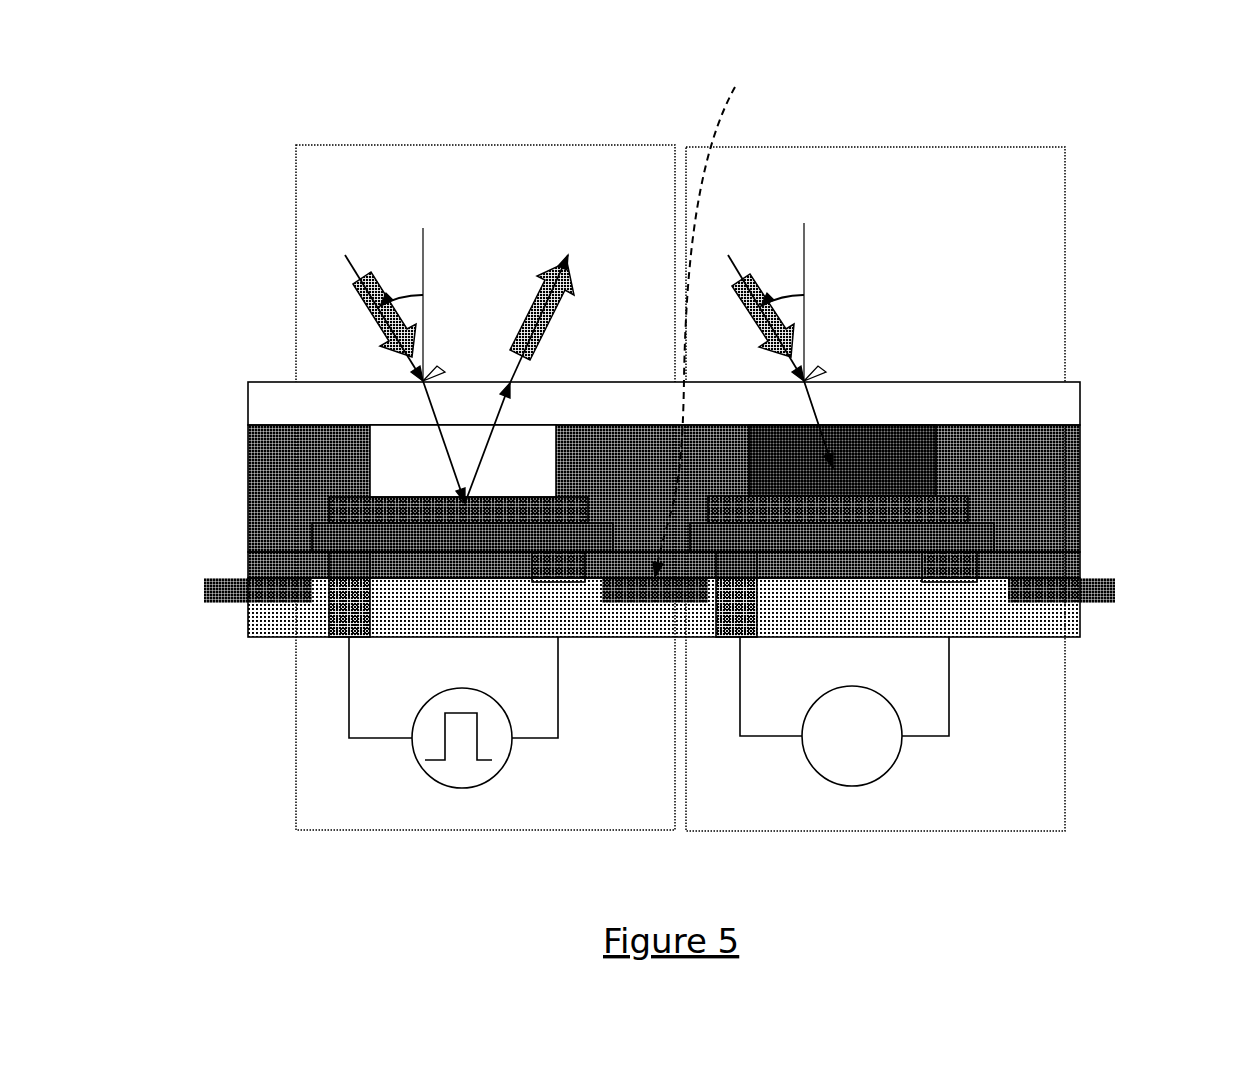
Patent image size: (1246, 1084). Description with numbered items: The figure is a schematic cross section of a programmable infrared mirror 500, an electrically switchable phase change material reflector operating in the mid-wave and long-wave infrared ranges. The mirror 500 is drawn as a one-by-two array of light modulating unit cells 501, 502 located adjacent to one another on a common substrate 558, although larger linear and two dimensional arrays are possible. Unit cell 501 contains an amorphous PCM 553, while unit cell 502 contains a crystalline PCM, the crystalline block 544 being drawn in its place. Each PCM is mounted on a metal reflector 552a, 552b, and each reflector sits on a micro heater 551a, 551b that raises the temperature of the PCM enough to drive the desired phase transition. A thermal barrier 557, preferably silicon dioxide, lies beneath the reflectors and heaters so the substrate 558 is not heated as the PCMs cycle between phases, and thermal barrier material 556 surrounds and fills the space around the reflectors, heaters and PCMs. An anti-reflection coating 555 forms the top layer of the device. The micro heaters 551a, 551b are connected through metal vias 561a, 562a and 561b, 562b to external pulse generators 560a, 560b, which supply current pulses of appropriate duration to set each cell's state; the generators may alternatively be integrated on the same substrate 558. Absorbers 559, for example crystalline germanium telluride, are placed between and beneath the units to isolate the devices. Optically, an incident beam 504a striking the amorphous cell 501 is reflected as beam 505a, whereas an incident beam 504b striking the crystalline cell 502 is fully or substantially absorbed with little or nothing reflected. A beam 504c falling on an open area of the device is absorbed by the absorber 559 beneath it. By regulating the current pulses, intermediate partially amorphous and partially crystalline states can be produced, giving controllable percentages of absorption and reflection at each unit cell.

The programmable infrared mirror 500 is at (297, 117).
The unit cell 501 is at (485, 473).
The unit cell 502 is at (875, 475).
The incident optical beam 504a is at (387, 359).
The incident optical beam 504b is at (766, 344).
The incident optical beam in open area 504c is at (1140, 561).
The reflected beam 505a is at (535, 359).
The absorber layer 544 is at (940, 477).
The micro heater 551a is at (365, 537).
The micro heater 551b is at (972, 537).
The metal reflector 552a is at (345, 505).
The metal reflector 552b is at (955, 505).
The amorphous PCM material 553 is at (385, 458).
The anti-reflection coating 555 is at (385, 402).
The thermal barrier material 556 is at (613, 448).
The thermal barrier 557 is at (447, 569).
The substrate 558 is at (453, 612).
The absorber 559 is at (655, 605).
The pulse generator 560a is at (442, 795).
The pulse generator 560b is at (855, 793).
The metal via 561a is at (338, 610).
The metal via 561b is at (737, 612).
The metal via 562a is at (563, 575).
The metal via 562b is at (957, 580).